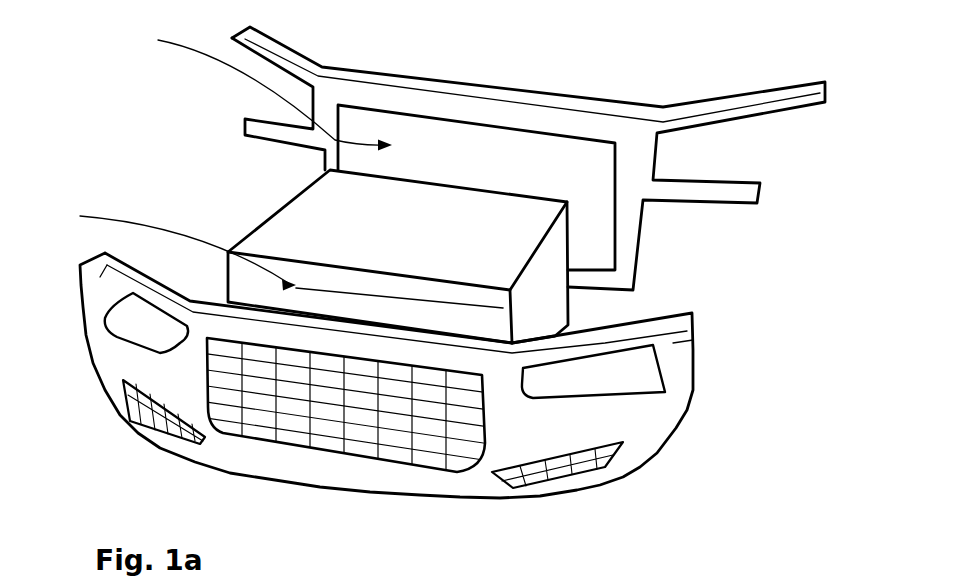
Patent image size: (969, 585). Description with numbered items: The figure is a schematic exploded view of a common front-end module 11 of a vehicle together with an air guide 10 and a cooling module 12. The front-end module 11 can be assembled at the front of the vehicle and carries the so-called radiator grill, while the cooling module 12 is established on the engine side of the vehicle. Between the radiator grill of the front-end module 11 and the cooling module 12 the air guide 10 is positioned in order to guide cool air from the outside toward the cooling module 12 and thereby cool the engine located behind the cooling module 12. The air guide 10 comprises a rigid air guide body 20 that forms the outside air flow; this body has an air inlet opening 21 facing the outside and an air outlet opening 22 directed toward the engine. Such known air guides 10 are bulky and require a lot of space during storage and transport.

The air guide 10 is at (273, 206).
The front-end module 11 is at (655, 418).
The cooling module 12 is at (577, 178).
The air guide body 20 is at (280, 252).
The air inlet opening 21 is at (165, 246).
The air outlet opening 22 is at (252, 87).